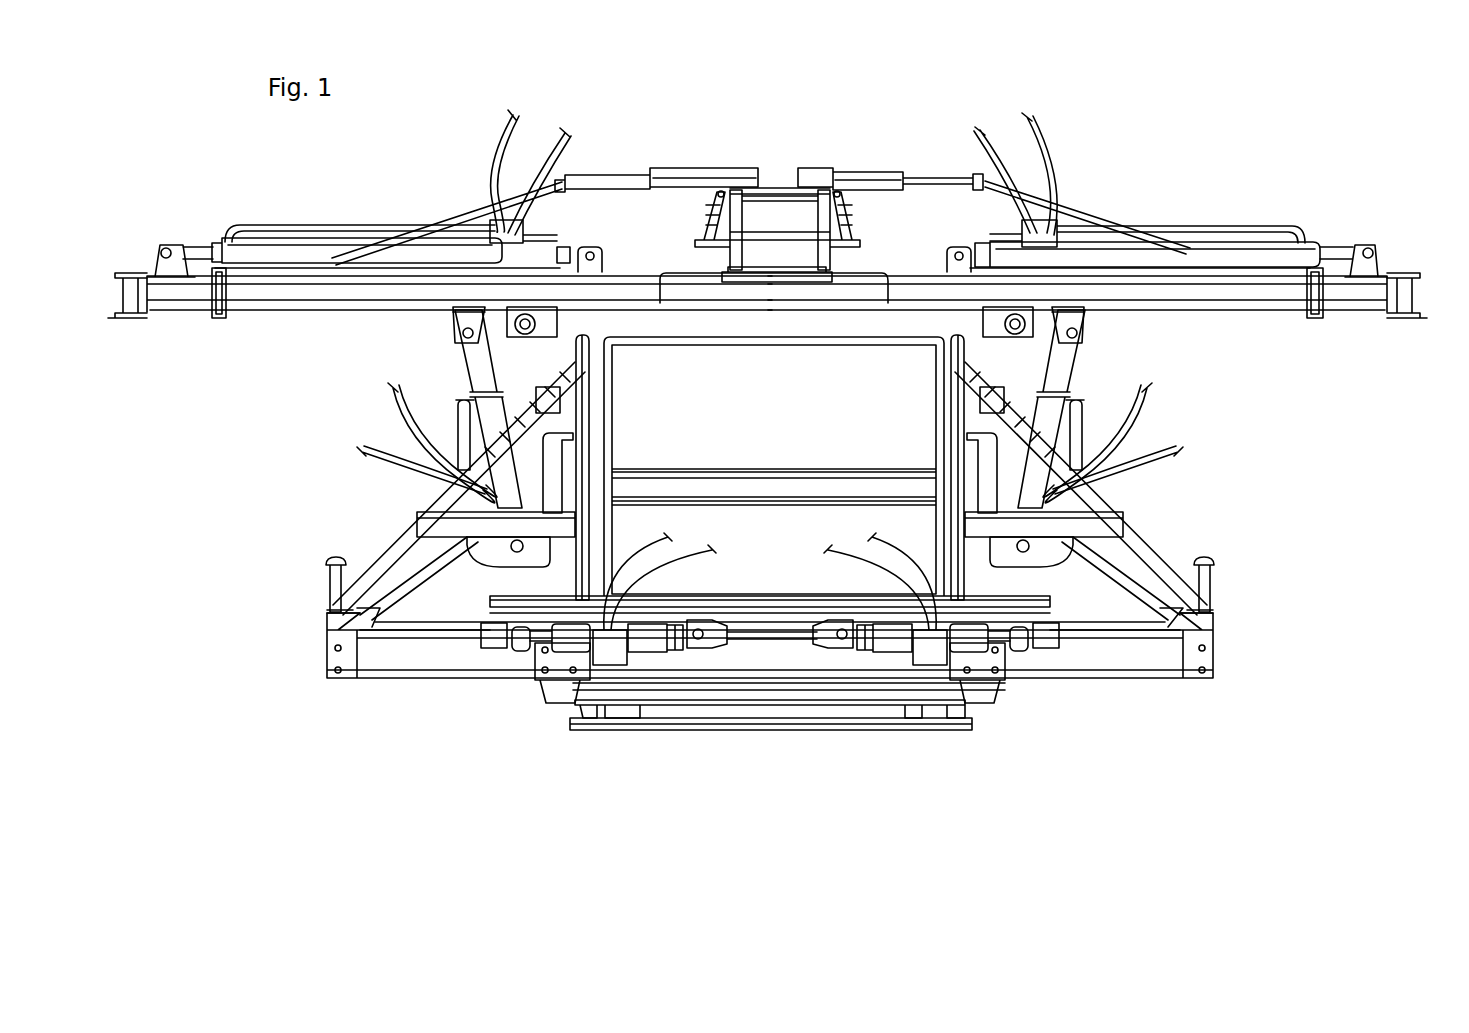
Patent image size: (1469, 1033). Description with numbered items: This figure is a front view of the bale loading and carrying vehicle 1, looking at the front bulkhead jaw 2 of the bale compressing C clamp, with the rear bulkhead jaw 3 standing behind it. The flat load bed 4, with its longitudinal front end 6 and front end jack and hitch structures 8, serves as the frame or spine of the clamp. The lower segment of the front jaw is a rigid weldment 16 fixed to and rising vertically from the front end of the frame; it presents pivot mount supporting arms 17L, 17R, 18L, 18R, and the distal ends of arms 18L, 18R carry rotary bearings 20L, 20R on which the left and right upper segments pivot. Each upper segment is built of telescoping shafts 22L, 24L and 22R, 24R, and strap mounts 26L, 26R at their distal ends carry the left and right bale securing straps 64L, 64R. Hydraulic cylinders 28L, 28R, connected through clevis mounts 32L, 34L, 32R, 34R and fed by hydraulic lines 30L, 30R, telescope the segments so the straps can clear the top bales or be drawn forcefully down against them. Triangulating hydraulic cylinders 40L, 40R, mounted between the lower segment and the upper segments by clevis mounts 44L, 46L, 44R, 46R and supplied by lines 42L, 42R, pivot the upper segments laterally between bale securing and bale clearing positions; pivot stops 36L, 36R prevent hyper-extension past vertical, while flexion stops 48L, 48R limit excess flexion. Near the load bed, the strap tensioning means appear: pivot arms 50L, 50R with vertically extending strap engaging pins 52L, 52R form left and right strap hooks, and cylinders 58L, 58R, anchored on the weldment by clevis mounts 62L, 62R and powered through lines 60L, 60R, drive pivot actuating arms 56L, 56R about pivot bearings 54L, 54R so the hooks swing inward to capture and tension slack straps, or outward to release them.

The vehicle 1 is at (340, 403).
The front bulkhead jaw 2 is at (922, 400).
The rear bulkhead jaw 3 is at (777, 178).
The load bed 4 is at (862, 290).
The front end 6 is at (1158, 670).
The front end jack and hitch structures 8 is at (880, 733).
The rigid weldment 16 is at (613, 438).
The pivot mount supporting arm 17R is at (453, 622).
The pivot mount supporting arm 17L is at (1027, 600).
The pivot mount arm 18R is at (537, 320).
The pivot mount arm 18L is at (1003, 320).
The rotary bearing 20R is at (538, 390).
The rotary bearing 20L is at (1004, 390).
The telescoping shaft 22R is at (320, 297).
The telescoping shaft 22L is at (1243, 300).
The telescoping shaft 24R is at (190, 298).
The telescoping shaft 24L is at (1345, 298).
The strap mount 26R is at (136, 320).
The strap mount 26L is at (1410, 298).
The hydraulic cylinder 28R is at (272, 255).
The hydraulic cylinder 28L is at (1215, 252).
The hydraulic fluid line 30R is at (383, 226).
The hydraulic fluid line 30L is at (1160, 225).
The clevis mount 32R is at (602, 262).
The clevis mount 32L is at (945, 250).
The clevis mount 34R is at (167, 245).
The clevis mount 34L is at (1378, 250).
The pivot stop 36R is at (480, 392).
The pivot stop 36L is at (996, 410).
The triangulating hydraulic cylinder 40R is at (462, 462).
The triangulating hydraulic cylinder 40L is at (1062, 428).
The hydraulic fluid line 42R is at (388, 476).
The hydraulic fluid line 42L is at (1133, 436).
The clevis mount 44R is at (458, 330).
The clevis mount 44L is at (1085, 330).
The clevis mount 46R is at (505, 565).
The clevis mount 46L is at (1012, 563).
The flexion stop 48R is at (463, 535).
The flexion stop 48L is at (1133, 517).
The pivot arm 50R is at (445, 640).
The pivot arm 50L is at (1097, 640).
The strap engaging pin 52R is at (330, 590).
The strap engaging pin 52L is at (1210, 575).
The pivot bearing 54R is at (480, 614).
The pivot bearing 54L is at (1050, 596).
The pivot actuating arm 56R is at (520, 652).
The pivot actuating arm 56L is at (1050, 644).
The cylinder 58R is at (660, 630).
The cylinder 58L is at (905, 628).
The hydraulic fluid line 60R is at (670, 540).
The hydraulic fluid line 60L is at (940, 660).
The clevis mount 62R is at (715, 642).
The clevis mount 62L is at (850, 622).
The bale securing strap 64R is at (525, 200).
The bale securing strap 64L is at (1065, 205).